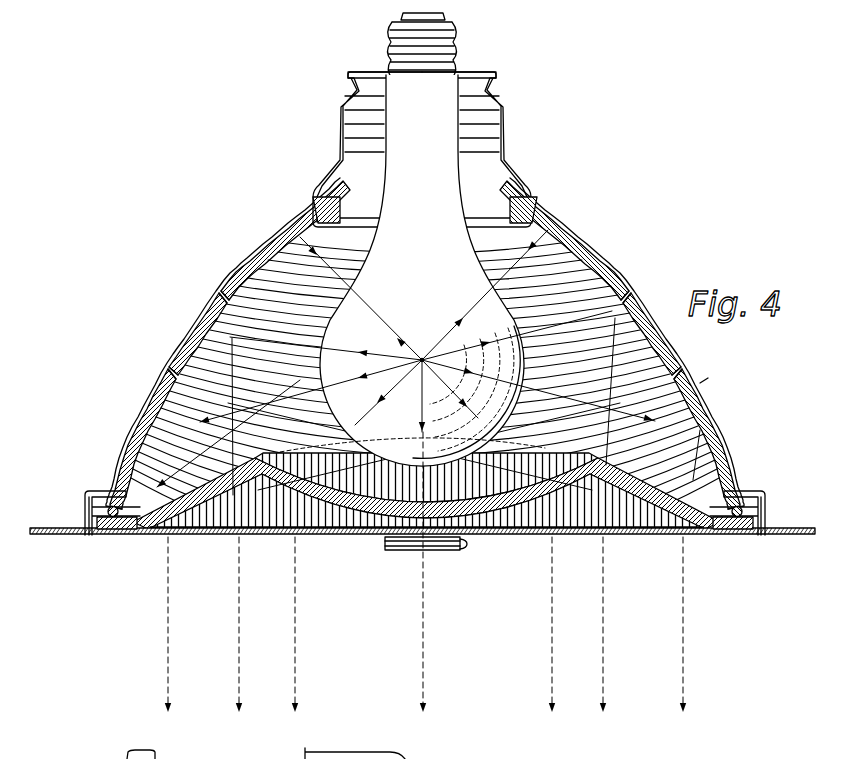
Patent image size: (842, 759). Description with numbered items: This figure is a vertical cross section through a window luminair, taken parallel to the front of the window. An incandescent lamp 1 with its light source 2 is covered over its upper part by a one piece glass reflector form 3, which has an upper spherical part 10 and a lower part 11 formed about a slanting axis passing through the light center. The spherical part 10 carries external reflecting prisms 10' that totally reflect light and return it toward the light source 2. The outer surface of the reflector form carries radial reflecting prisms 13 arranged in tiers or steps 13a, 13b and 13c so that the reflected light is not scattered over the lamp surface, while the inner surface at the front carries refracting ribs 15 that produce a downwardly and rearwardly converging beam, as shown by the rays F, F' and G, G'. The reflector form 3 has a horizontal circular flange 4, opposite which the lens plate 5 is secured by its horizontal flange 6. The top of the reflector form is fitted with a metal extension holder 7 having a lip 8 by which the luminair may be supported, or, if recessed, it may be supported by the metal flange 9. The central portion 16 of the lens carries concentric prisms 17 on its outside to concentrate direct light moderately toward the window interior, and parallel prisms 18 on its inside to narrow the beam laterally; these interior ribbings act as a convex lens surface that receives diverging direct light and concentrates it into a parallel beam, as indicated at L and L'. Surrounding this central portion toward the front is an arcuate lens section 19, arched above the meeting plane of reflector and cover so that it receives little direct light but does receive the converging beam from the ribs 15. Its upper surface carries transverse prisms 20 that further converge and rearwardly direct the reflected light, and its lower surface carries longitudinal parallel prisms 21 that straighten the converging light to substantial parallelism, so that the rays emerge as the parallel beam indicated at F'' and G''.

The incandescent lamp 1 is at (372, 262).
The light source 2 is at (422, 358).
The glass reflector form 3 is at (426, 343).
The horizontal circular flange 4 is at (752, 491).
The lens plate 5 is at (148, 535).
The horizontal flange 6 is at (724, 534).
The metal extension holder 7 is at (508, 130).
The lip 8 is at (497, 80).
The metal flange 9 is at (62, 530).
The upper spherical part 10 is at (425, 343).
The external reflecting prisms 10' is at (406, 201).
The lower part 11 is at (180, 348).
The radial reflecting prisms 13 is at (698, 383).
The prism tier 13a is at (155, 390).
The prism tier 13b is at (198, 328).
The prism tier 13c is at (258, 268).
The refracting ribs 15 is at (228, 290).
The central portion of lens 16 is at (383, 545).
The concentric prisms 17 is at (508, 535).
The parallel prisms 18 is at (290, 458).
The arcuate lens section 19 is at (200, 478).
The transverse prisms 20 is at (258, 463).
The longitudinal parallel prisms 21 is at (215, 535).
The ray G is at (421, 331).
The reflected ray G' is at (422, 406).
The parallel beam ray G'' is at (433, 624).
The ray F is at (427, 392).
The reflected ray F' is at (431, 430).
The parallel beam ray F'' is at (437, 624).
The direct ray L is at (412, 390).
The concentrated ray L' is at (433, 572).